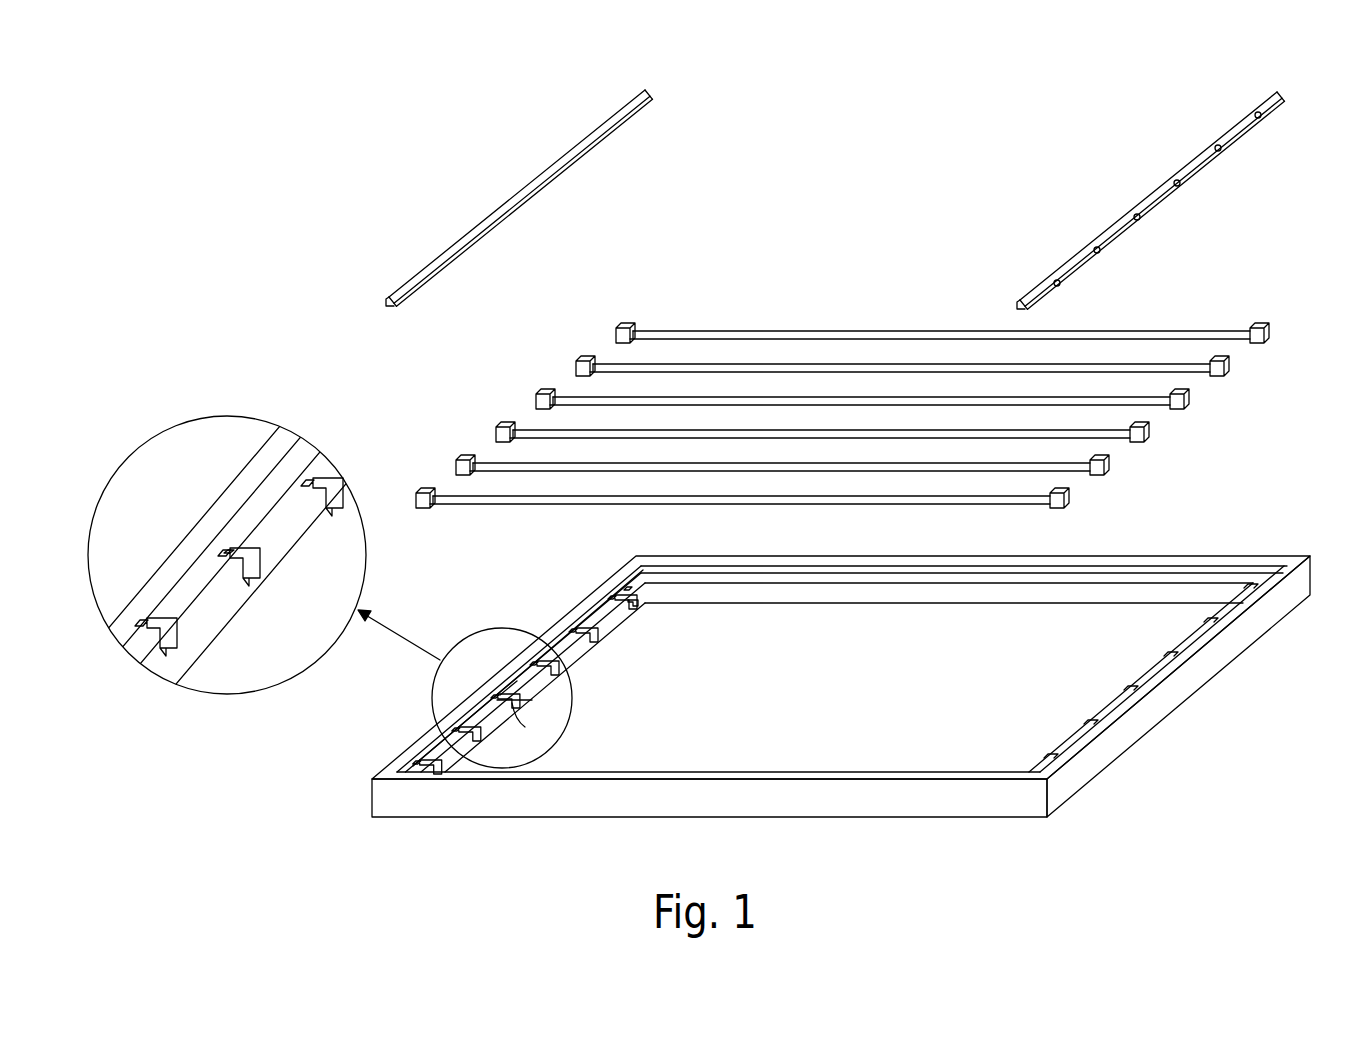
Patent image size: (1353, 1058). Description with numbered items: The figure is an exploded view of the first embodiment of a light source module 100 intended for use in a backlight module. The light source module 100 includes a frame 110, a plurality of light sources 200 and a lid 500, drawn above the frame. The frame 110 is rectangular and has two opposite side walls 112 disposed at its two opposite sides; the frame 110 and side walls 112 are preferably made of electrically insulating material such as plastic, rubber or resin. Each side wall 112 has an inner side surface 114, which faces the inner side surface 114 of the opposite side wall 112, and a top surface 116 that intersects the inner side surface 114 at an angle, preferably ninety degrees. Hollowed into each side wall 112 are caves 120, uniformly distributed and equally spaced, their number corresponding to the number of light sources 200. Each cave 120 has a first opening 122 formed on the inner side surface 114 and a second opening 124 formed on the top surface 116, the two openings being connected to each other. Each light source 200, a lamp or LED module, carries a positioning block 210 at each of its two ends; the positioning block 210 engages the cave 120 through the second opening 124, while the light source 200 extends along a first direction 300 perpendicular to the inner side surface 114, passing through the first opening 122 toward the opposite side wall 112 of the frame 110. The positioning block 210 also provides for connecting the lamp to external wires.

The light source module 100 is at (540, 53).
The frame 110 is at (1215, 556).
The side wall 112 is at (403, 753).
The inner side surface 114 is at (573, 655).
The top surface 116 is at (532, 677).
The cave 120 is at (470, 727).
The first opening 122 is at (258, 568).
The second opening 124 is at (243, 545).
The light source 200 is at (693, 328).
The positioning block 210 is at (625, 323).
The first direction 300 is at (520, 861).
The lid 500 is at (536, 173).